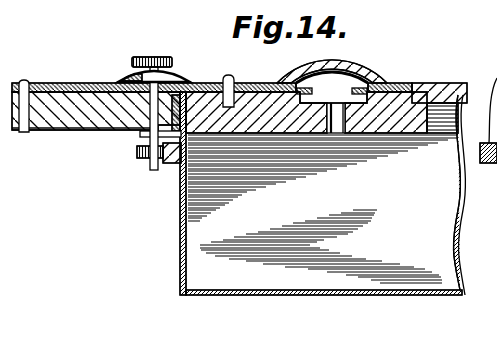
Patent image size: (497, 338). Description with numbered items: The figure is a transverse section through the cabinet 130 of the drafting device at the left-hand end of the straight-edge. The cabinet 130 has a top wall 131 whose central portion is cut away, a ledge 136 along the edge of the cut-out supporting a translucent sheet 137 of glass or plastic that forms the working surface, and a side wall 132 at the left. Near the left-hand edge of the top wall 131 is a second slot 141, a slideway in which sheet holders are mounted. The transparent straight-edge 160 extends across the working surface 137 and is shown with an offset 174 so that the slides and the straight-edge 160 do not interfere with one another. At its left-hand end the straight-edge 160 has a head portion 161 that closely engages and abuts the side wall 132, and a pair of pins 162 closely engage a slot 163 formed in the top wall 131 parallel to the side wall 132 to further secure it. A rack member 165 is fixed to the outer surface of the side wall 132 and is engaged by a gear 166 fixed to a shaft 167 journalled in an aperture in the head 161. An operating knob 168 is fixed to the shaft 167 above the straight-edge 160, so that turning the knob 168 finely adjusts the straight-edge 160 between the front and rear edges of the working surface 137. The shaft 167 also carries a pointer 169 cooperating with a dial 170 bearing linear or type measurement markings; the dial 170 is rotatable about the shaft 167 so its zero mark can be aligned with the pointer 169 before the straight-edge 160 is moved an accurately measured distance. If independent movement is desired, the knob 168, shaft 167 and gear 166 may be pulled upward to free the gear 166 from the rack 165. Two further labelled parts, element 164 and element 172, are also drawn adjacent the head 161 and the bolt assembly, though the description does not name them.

The cabinet 130 is at (231, 277).
The top wall 131 is at (430, 83).
The side wall 132 is at (181, 235).
The ledge 136 is at (412, 93).
The translucent sheet 137 is at (450, 103).
The second slot 141 is at (371, 76).
The straight-edge 160 is at (478, 64).
The head portion 161 is at (150, 122).
The pins 162 is at (232, 75).
The slot 163 is at (270, 81).
The plate 164 is at (93, 122).
The rack member 165 is at (172, 163).
The gear 166 is at (145, 159).
The shaft 167 is at (150, 136).
The operating knob 168 is at (160, 56).
The pointer 169 is at (173, 72).
The dial 170 is at (125, 74).
The angle bracket 172 is at (176, 113).
The offset 174 is at (347, 62).